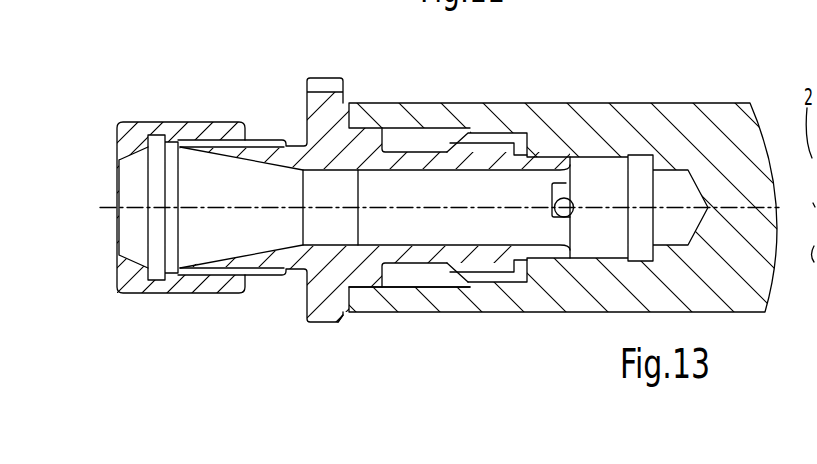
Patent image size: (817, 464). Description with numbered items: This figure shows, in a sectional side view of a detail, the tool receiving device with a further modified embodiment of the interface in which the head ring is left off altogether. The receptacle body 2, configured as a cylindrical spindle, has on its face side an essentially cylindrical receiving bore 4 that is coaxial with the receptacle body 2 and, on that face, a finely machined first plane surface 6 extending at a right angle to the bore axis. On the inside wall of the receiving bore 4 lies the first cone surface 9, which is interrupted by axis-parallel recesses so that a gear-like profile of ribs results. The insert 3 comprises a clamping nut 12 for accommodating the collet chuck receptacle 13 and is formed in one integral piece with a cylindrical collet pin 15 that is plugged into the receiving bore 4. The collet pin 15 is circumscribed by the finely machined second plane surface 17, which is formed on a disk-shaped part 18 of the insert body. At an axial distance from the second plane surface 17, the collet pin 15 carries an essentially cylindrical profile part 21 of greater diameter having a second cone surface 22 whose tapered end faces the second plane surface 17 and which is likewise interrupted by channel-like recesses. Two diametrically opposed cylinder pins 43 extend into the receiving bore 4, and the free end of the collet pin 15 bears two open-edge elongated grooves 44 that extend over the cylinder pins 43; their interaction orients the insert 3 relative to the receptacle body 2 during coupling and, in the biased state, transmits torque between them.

The receptacle body 2 is at (703, 132).
The insert 3 is at (283, 112).
The receiving bore 4 is at (618, 235).
The first plane surface 6 is at (383, 292).
The first cone surface 9 is at (450, 140).
The clamping nut 12 is at (137, 282).
The collet chuck receptacle 13 is at (268, 262).
The collet pin 15 is at (407, 163).
The second plane surface 17 is at (356, 0).
The disk-shaped part 18 is at (322, 308).
The profile part 21 is at (488, 145).
The second cone surface 22 is at (455, 264).
The cylinder pins 43 is at (570, 200).
The elongated grooves 44 is at (552, 187).